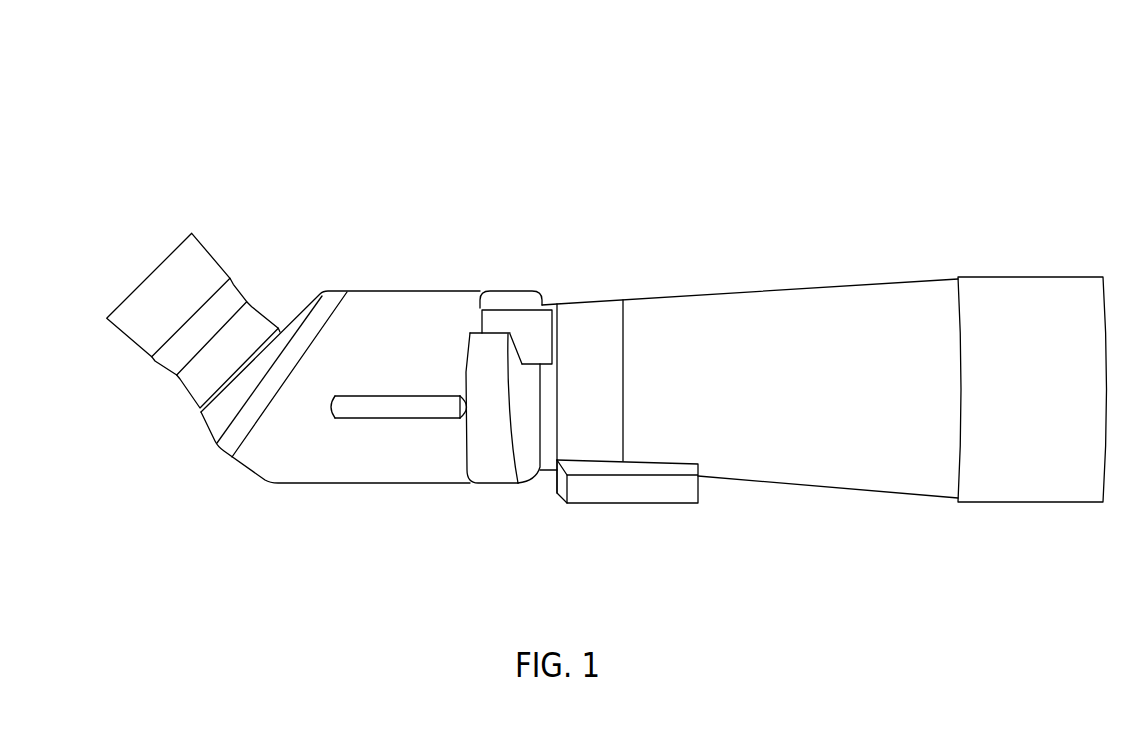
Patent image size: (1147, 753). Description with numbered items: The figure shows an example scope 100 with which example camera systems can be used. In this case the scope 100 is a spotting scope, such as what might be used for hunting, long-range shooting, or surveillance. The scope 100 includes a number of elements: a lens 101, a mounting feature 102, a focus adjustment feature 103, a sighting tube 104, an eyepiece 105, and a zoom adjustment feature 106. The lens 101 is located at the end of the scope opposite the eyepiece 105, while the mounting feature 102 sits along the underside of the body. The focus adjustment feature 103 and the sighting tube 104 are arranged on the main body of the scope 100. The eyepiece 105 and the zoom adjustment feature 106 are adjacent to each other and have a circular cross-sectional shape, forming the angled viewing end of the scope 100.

The scope 100 is at (647, 89).
The lens 101 is at (1021, 276).
The mounting feature 102 is at (631, 505).
The focus adjustment feature 103 is at (542, 304).
The sighting tube 104 is at (392, 418).
The eyepiece 105 is at (172, 252).
The zoom adjustment feature 106 is at (240, 289).